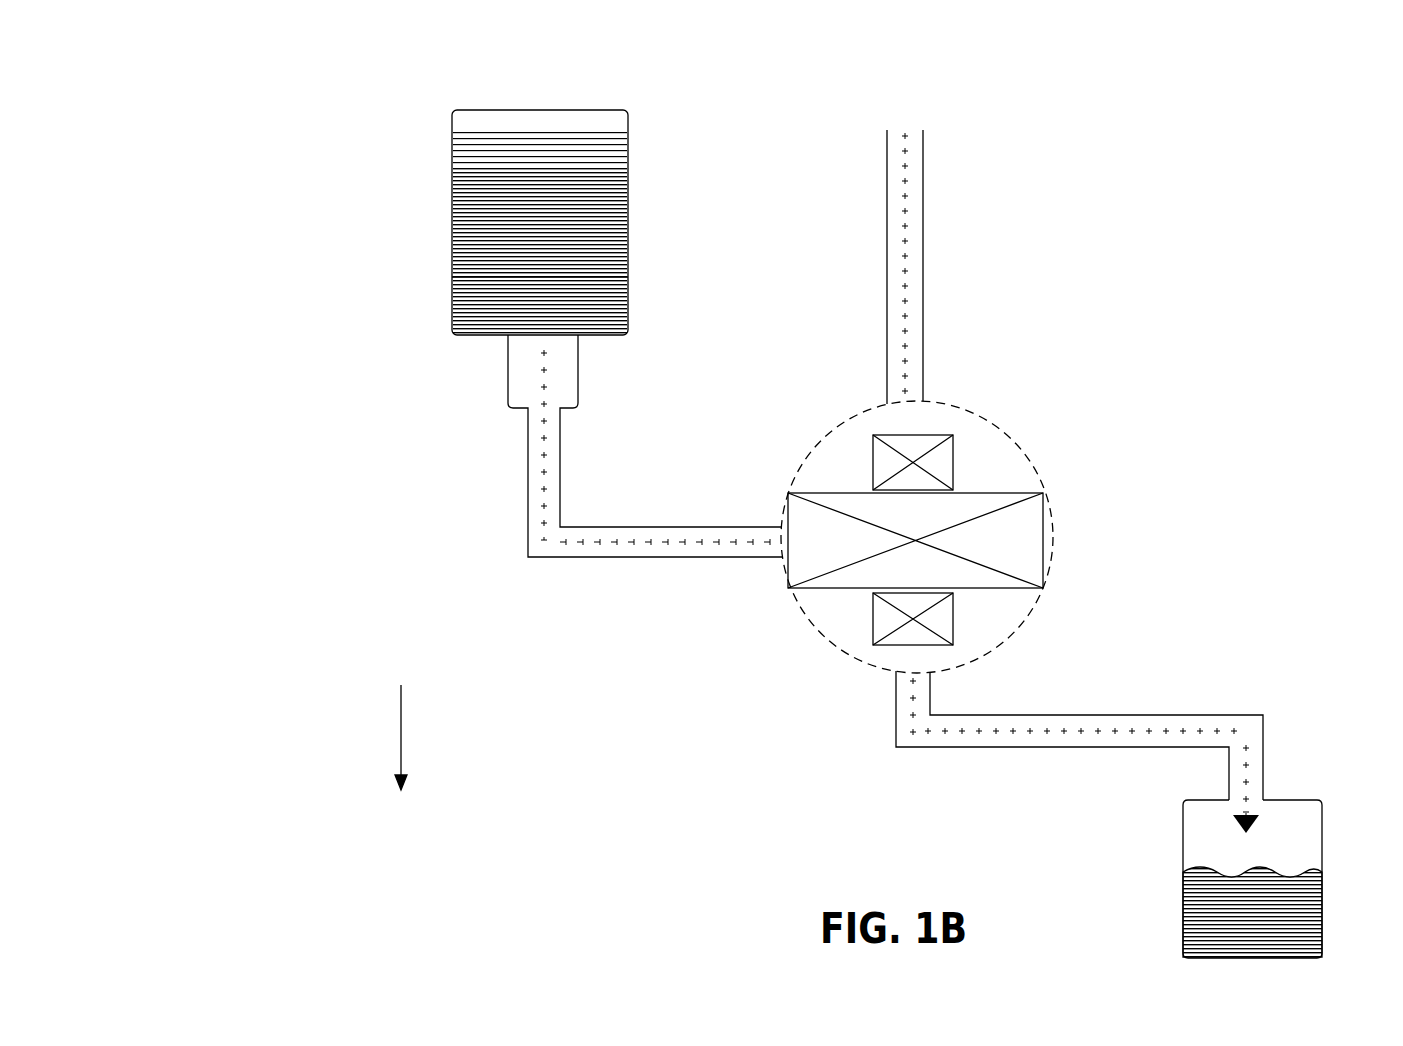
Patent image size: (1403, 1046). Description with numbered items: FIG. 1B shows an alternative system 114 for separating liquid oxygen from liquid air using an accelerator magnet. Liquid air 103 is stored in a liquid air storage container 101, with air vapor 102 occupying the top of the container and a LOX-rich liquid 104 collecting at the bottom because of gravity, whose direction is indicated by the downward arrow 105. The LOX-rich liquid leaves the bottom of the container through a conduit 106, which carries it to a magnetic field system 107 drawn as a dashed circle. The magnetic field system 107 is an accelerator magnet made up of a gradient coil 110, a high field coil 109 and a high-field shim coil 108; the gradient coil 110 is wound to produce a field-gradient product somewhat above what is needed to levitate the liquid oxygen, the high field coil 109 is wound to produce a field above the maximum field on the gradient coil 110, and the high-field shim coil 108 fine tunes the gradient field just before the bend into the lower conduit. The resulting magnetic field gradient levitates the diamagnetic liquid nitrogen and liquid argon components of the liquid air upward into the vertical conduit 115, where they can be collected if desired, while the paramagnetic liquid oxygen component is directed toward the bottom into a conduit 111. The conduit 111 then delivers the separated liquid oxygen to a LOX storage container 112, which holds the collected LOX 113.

The liquid air storage container 101 is at (448, 164).
The air vapor 102 is at (558, 125).
The liquid air 103 is at (558, 208).
The LOX-rich liquid 104 is at (558, 315).
The downward arrow 105 is at (370, 738).
The conduit 106 is at (652, 520).
The magnetic field system 107 is at (812, 446).
The high-field shim coil 108 is at (905, 432).
The high field coil 109 is at (788, 500).
The gradient coil 110 is at (872, 630).
The conduit 111 is at (1132, 713).
The LOX storage container 112 is at (1185, 870).
The LOX 113 is at (1276, 939).
The alternative system 114 is at (321, 121).
The conduit 115 is at (887, 177).